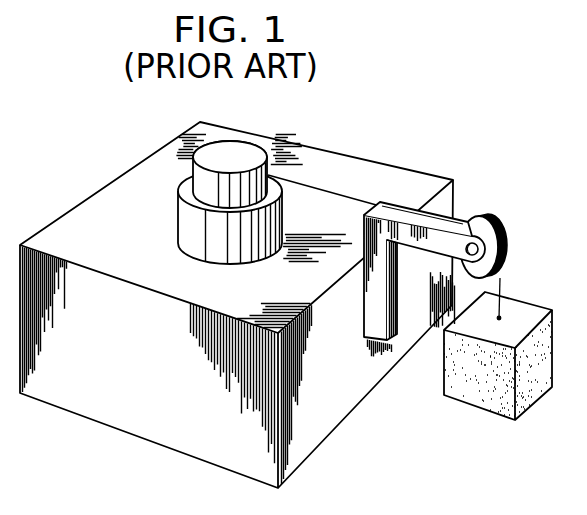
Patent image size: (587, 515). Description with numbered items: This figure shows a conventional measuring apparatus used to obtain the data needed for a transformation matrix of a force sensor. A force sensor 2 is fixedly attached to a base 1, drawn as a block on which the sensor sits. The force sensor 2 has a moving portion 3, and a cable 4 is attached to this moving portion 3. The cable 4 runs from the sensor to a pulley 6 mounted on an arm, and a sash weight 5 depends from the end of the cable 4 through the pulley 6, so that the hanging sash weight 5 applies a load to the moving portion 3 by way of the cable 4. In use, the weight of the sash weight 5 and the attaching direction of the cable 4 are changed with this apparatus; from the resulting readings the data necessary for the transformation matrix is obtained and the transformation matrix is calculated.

The base 1 is at (155, 423).
The force sensor 2 is at (192, 228).
The moving portion 3 is at (247, 153).
The cable 4 is at (347, 197).
The sash weight 5 is at (480, 390).
The pulley 6 is at (507, 240).